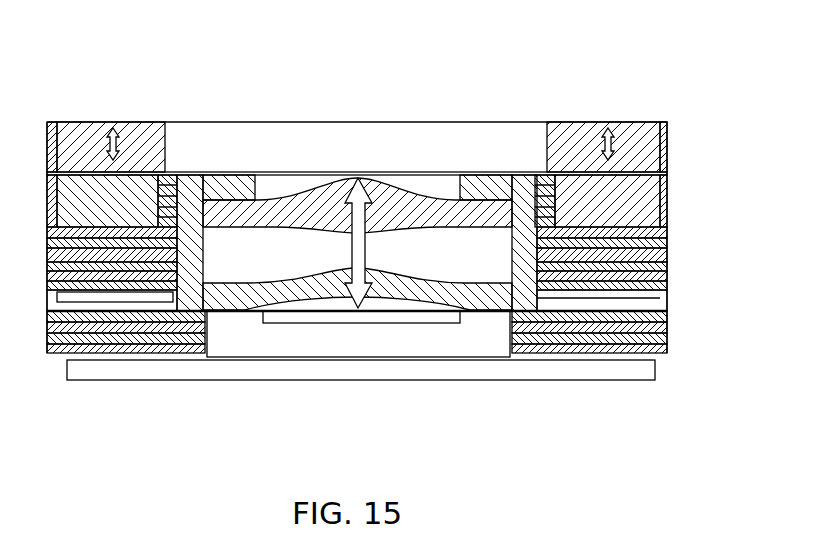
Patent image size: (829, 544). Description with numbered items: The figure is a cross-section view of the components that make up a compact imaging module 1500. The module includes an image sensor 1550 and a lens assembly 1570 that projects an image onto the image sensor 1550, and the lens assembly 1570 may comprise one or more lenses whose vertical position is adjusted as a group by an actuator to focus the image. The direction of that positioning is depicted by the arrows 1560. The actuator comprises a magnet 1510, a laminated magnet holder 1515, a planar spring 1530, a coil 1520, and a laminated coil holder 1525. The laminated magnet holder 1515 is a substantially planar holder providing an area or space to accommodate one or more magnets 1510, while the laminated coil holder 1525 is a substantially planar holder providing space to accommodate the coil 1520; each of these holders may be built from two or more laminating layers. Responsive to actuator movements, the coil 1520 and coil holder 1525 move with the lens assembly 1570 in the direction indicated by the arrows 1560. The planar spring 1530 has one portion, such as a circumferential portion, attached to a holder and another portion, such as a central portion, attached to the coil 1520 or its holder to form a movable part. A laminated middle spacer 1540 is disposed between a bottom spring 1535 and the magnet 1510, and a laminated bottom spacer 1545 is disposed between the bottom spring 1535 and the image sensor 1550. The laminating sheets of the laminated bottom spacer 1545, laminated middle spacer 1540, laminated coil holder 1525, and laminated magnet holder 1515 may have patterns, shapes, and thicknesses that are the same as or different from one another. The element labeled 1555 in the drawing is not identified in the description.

The compact imaging module 1500 is at (310, 41).
The magnet 1510 is at (637, 216).
The laminated magnet holder 1515 is at (667, 208).
The coil 1520 is at (645, 122).
The laminated coil holder 1525 is at (667, 159).
The planar spring 1530 is at (667, 176).
The bottom spring 1535 is at (618, 312).
The laminated middle spacer 1540 is at (675, 227).
The laminated bottom spacer 1545 is at (675, 310).
The image sensor 1550 is at (297, 382).
The lens holder 1555 is at (203, 248).
The arrow 1560 is at (108, 124).
The lens assembly 1570 is at (425, 198).